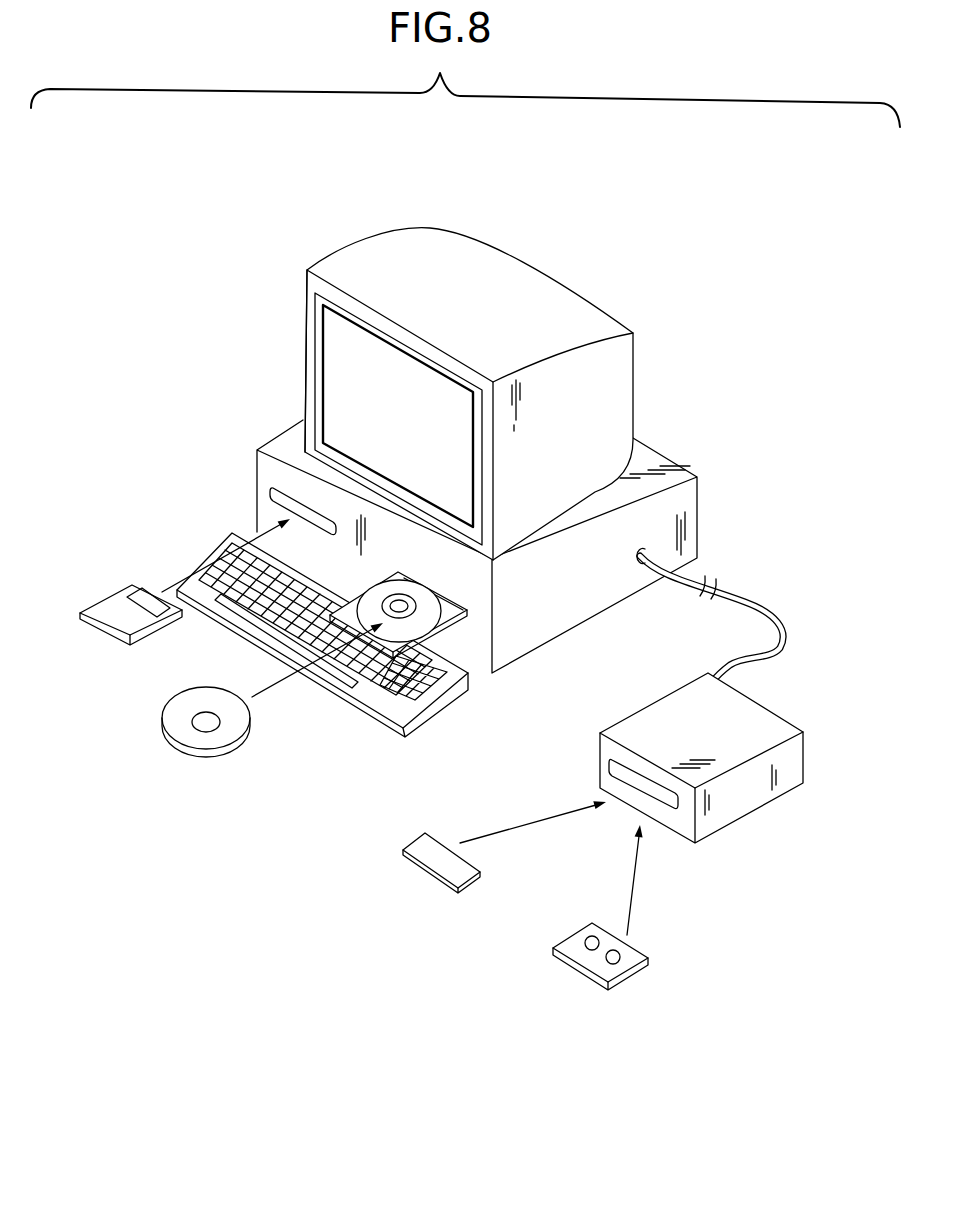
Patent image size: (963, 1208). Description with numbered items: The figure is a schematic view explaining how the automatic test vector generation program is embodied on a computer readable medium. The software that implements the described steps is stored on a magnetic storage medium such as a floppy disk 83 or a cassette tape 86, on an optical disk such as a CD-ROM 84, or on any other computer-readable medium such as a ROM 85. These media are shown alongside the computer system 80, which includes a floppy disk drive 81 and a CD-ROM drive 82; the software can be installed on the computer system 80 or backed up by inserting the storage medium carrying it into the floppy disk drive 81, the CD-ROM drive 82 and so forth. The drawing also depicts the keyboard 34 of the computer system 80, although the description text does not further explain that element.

The computer system 80 is at (652, 224).
The floppy disk drive 81 is at (272, 492).
The CD-ROM drive 82 is at (470, 596).
The floppy disk 83 is at (110, 592).
The CD-ROM 84 is at (242, 750).
The ROM 85 is at (427, 878).
The cassette tape 86 is at (620, 990).
The keyboard 34 is at (453, 697).